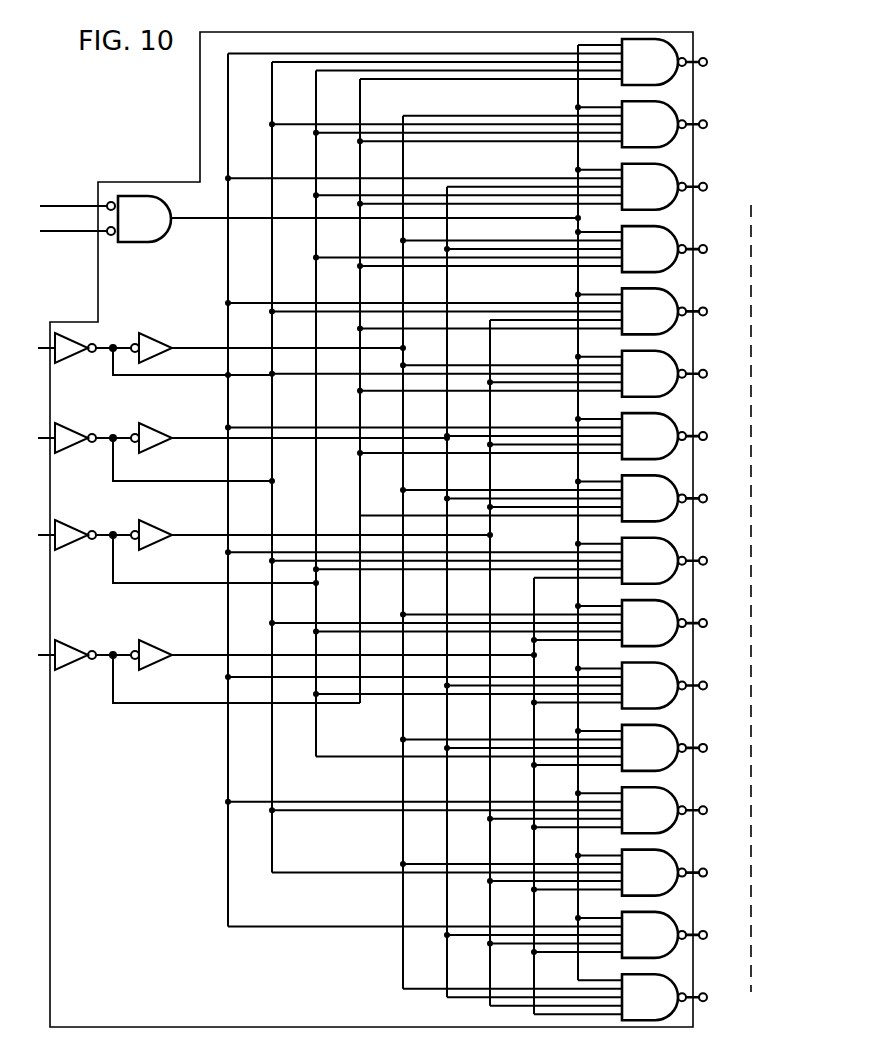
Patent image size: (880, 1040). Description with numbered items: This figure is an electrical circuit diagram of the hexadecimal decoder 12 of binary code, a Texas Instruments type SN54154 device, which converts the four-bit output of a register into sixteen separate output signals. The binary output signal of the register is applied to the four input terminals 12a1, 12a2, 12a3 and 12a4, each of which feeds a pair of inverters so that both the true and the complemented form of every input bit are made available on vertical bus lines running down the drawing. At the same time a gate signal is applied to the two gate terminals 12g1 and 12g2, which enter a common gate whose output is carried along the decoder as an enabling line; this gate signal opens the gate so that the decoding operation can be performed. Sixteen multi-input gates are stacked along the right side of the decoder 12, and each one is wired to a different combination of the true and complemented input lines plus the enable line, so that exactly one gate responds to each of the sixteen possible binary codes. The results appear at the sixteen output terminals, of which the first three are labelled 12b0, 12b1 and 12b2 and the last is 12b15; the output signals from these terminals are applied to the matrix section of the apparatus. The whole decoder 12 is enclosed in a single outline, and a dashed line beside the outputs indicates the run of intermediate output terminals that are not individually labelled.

The hexadecimal decoder 12 is at (350, 34).
The gate terminal 12g1 is at (55, 203).
The gate terminal 12g2 is at (52, 236).
The input terminal 12a1 is at (43, 347).
The input terminal 12a2 is at (43, 437).
The input terminal 12a3 is at (43, 534).
The input terminal 12a4 is at (43, 654).
The output terminal 12b0 is at (708, 59).
The output terminal 12b1 is at (708, 122).
The output terminal 12b2 is at (708, 185).
The output terminal 12b15 is at (708, 999).